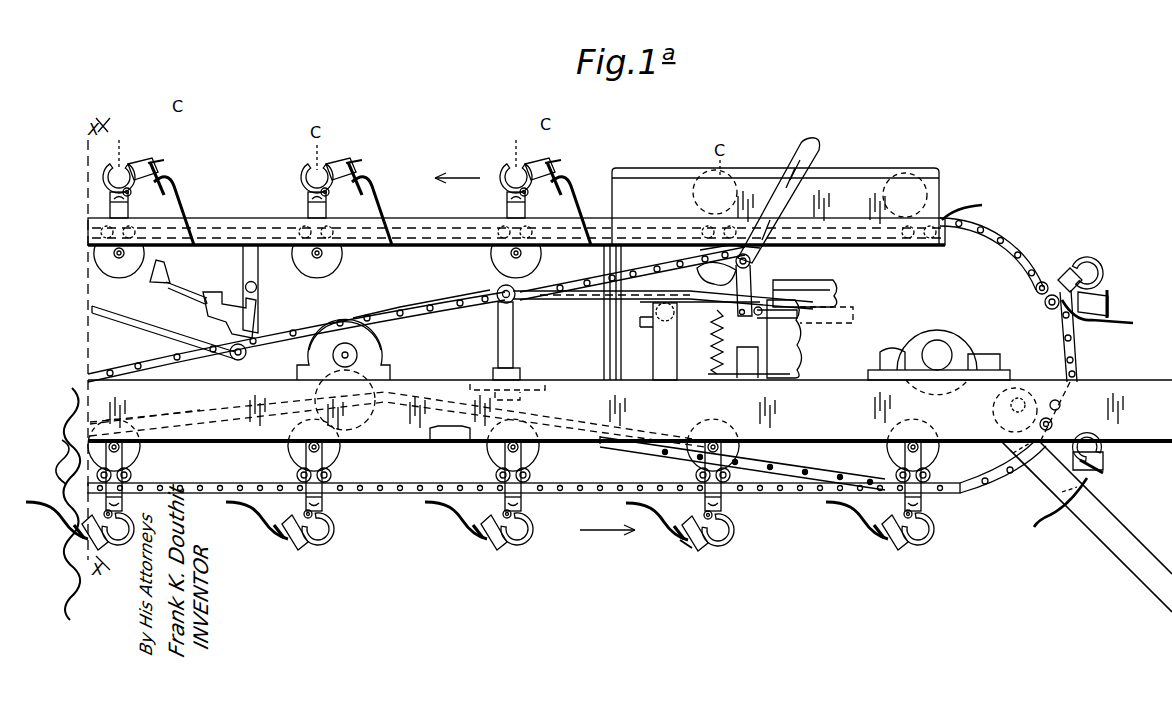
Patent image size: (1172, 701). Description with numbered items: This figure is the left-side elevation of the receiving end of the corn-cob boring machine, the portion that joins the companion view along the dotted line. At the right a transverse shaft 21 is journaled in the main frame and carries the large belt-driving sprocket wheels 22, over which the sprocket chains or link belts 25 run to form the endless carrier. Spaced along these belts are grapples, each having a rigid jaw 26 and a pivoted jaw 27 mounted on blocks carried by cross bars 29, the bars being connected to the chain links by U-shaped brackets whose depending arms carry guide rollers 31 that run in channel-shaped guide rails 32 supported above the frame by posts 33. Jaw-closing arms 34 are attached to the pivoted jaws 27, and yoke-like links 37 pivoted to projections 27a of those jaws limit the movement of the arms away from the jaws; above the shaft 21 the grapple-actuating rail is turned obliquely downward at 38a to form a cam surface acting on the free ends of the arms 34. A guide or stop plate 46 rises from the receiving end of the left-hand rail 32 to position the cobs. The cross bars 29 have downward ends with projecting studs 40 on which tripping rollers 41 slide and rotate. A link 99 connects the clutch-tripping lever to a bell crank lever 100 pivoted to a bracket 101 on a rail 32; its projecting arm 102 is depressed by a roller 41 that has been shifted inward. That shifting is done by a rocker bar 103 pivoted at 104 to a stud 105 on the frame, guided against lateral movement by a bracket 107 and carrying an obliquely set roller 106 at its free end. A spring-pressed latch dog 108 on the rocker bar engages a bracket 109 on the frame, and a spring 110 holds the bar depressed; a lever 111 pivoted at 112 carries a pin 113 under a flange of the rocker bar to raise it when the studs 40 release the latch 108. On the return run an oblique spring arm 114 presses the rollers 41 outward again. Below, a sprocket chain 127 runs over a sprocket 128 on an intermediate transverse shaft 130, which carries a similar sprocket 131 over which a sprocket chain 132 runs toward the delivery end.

The transverse shaft 21 is at (940, 350).
The belt-driving sprocket wheels 22 is at (1078, 350).
The sprocket chains or link belts 25 is at (430, 226).
The jaw 26 is at (126, 162).
The pivoted jaw 27 is at (142, 166).
The projections of the pivoted jaws 27a is at (366, 162).
The cross bars 29 is at (306, 498).
The guide rollers 31 is at (134, 473).
The guide rails 32 is at (262, 218).
The posts 33 is at (604, 356).
The jaw-closing arms 34 is at (182, 210).
The yoke-like links 37 is at (156, 172).
The obliquely turned end of rail 38a is at (939, 346).
The studs 40 is at (528, 450).
The tripping rollers 41 is at (126, 276).
The guide or stop plate 46 is at (848, 192).
The link 99 is at (150, 330).
The bell crank lever 100 is at (252, 316).
The bracket 101 is at (260, 272).
The projecting arm 102 is at (196, 284).
The rocker bar 103 is at (598, 302).
The pivot 104 is at (500, 302).
The stud 105 is at (498, 352).
The obliquely set roller 106 is at (808, 290).
The bracket 107 is at (654, 350).
The latch dog 108 is at (764, 342).
The bracket 109 is at (749, 374).
The spring 110 is at (703, 342).
The lever 111 is at (806, 154).
The pivot 112 is at (706, 240).
The projecting pin 113 is at (706, 278).
The oblique spring arm 114 is at (452, 444).
The sprocket chain 127 is at (196, 408).
The sprocket 128 is at (394, 312).
The intermediate transverse shaft 130 is at (383, 352).
The sprocket 131 is at (342, 322).
The sprocket chain 132 is at (455, 296).